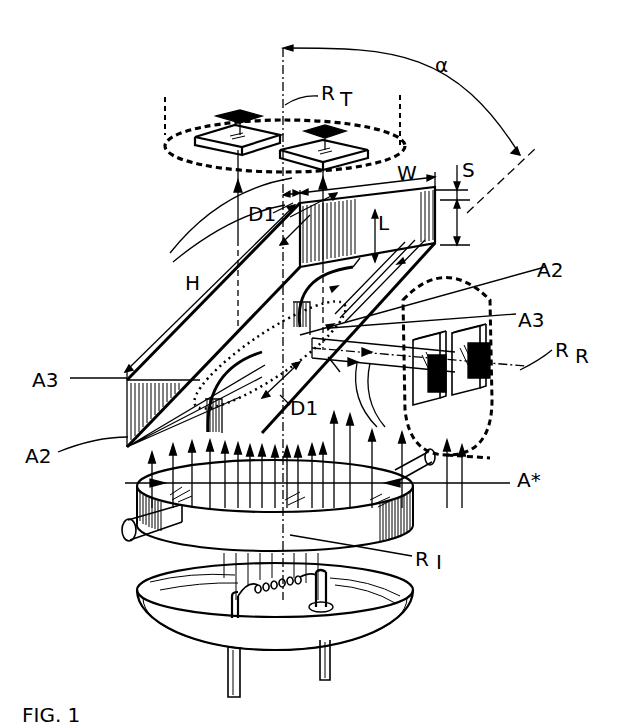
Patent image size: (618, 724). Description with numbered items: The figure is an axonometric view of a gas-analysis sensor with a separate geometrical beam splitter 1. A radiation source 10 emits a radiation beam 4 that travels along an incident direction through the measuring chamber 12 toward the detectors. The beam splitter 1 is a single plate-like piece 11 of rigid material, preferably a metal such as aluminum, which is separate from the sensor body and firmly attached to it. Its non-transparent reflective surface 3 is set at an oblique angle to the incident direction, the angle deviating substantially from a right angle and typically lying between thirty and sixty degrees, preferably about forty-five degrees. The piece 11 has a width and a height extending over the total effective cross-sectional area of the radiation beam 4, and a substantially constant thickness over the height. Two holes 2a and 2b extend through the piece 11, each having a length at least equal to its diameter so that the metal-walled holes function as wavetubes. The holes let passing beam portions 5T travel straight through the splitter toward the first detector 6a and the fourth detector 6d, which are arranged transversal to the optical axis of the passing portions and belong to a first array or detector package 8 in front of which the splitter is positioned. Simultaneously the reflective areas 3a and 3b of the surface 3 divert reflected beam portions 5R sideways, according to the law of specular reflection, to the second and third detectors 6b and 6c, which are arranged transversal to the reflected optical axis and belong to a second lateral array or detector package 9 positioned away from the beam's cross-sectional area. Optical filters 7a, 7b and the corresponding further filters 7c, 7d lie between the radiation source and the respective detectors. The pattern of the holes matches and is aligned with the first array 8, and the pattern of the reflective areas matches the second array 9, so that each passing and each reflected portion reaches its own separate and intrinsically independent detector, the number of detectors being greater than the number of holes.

The geometrical beam splitter 1 is at (465, 200).
The hole 2a is at (210, 402).
The second hole 2b is at (345, 290).
The non-transparent reflective surface 3 is at (365, 275).
The reflective area 3a is at (235, 333).
The reflective area 3b is at (400, 320).
The radiation beam 4 is at (152, 468).
The passing beam portion 5T is at (219, 231).
The reflected beam portion 5R is at (384, 408).
The first detector 6a is at (243, 110).
The second detector 6b is at (490, 378).
The third detector 6c is at (447, 390).
The fourth detector 6d is at (342, 128).
The optical filter 7a is at (215, 145).
The optical filter 7b is at (470, 390).
The chip carrier plate 7c is at (433, 400).
The chip carrier plate 7d is at (345, 152).
The first array of detectors 8 is at (183, 138).
The second lateral array of detectors 9 is at (445, 292).
The radiation source 10 is at (275, 582).
The piece of rigid material 11 is at (413, 221).
The measuring chamber 12 is at (413, 515).